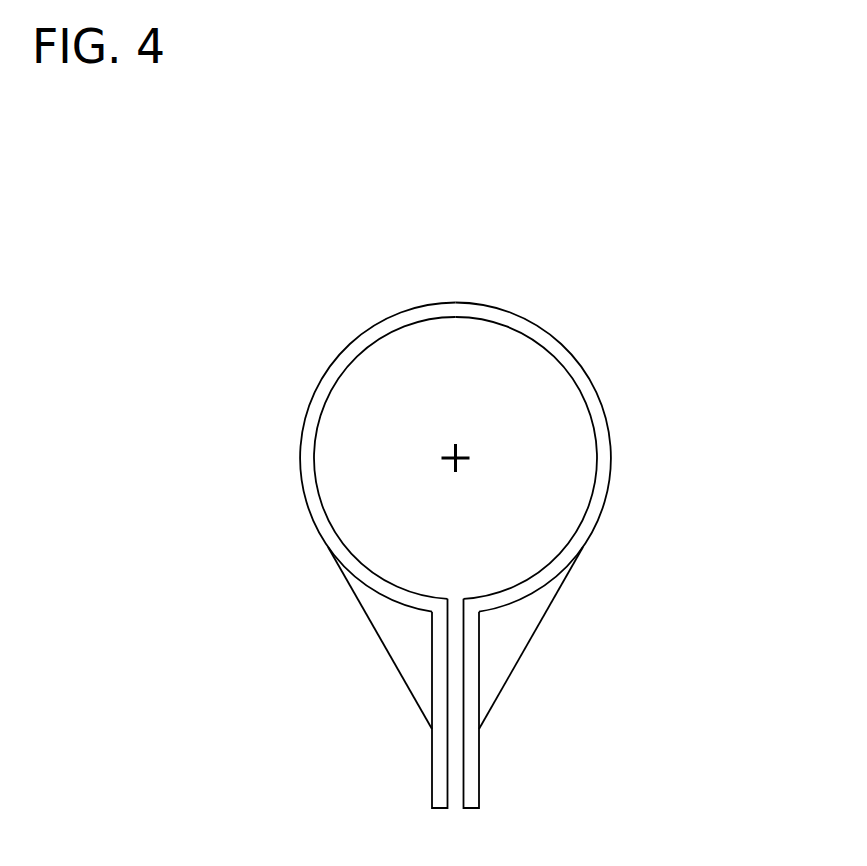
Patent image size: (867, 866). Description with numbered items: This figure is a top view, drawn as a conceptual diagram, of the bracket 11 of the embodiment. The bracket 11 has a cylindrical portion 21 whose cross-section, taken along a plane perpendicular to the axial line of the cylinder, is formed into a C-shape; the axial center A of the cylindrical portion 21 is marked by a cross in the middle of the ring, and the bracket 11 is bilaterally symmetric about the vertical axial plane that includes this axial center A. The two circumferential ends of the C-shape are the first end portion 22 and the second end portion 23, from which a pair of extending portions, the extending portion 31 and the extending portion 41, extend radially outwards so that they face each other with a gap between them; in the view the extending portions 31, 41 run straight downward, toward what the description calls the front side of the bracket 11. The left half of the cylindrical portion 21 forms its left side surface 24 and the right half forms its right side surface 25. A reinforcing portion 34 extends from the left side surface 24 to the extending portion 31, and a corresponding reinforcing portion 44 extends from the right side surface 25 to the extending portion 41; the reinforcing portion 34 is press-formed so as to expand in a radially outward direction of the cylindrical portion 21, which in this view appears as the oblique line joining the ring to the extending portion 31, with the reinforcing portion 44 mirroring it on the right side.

The bracket 11 is at (608, 293).
The cylindrical portion 21 is at (355, 340).
The first end portion 22 is at (437, 605).
The second end portion 23 is at (474, 605).
The left side surface 24 is at (300, 452).
The right side surface 25 is at (611, 452).
The extending portion 31 is at (438, 776).
The extending portion 41 is at (473, 776).
The reinforcing portion 34 is at (412, 663).
The reinforcing portion 44 is at (499, 663).
The axial center A is at (460, 455).